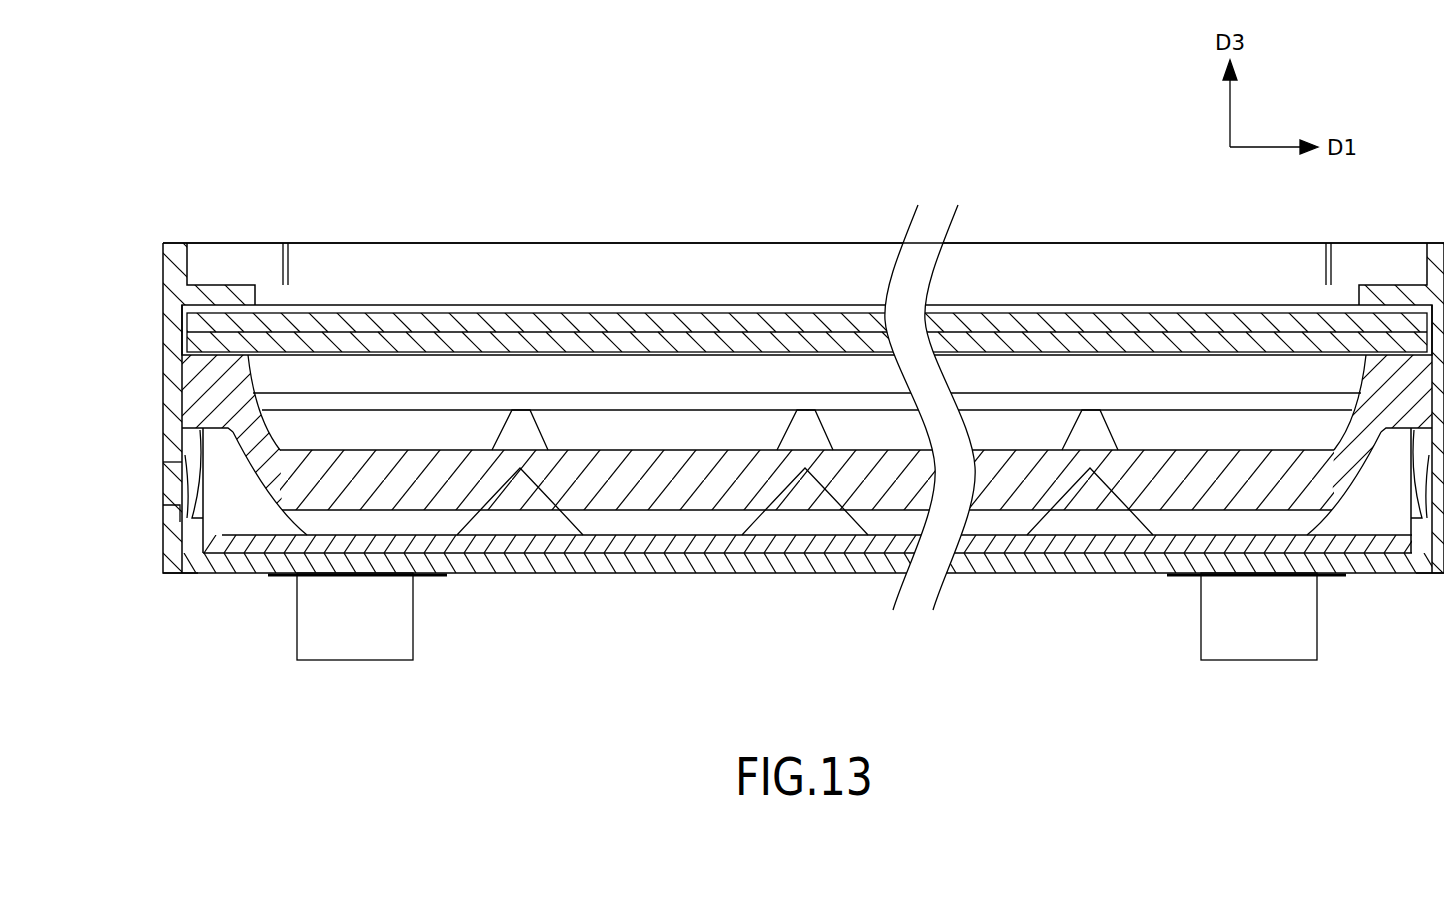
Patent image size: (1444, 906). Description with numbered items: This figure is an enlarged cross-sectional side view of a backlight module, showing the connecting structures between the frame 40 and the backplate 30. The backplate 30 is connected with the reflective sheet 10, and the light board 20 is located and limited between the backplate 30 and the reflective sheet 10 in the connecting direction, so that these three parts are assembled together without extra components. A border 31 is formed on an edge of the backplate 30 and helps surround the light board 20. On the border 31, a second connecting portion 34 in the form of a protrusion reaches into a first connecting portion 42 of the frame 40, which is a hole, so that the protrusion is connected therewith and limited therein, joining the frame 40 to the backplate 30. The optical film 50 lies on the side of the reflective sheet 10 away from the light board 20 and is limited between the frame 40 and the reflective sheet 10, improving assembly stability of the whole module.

The reflective sheet 10 is at (440, 418).
The light board 20 is at (650, 555).
The backplate 30 is at (522, 580).
The border 31 is at (193, 553).
The second connecting portion 34 is at (180, 505).
The frame 40 is at (695, 292).
The first connecting portion 42 is at (178, 462).
The optical film 50 is at (1028, 310).